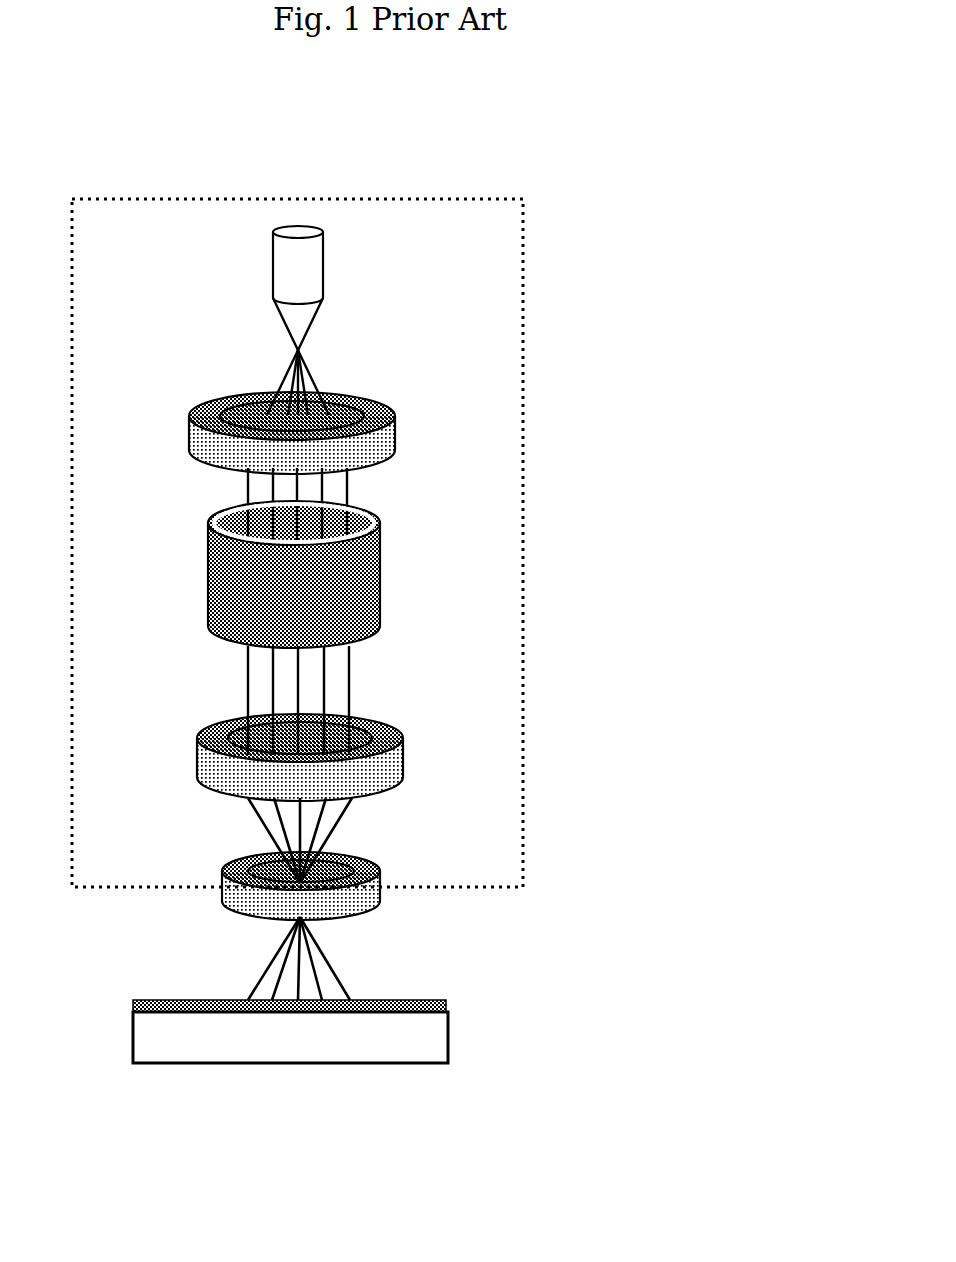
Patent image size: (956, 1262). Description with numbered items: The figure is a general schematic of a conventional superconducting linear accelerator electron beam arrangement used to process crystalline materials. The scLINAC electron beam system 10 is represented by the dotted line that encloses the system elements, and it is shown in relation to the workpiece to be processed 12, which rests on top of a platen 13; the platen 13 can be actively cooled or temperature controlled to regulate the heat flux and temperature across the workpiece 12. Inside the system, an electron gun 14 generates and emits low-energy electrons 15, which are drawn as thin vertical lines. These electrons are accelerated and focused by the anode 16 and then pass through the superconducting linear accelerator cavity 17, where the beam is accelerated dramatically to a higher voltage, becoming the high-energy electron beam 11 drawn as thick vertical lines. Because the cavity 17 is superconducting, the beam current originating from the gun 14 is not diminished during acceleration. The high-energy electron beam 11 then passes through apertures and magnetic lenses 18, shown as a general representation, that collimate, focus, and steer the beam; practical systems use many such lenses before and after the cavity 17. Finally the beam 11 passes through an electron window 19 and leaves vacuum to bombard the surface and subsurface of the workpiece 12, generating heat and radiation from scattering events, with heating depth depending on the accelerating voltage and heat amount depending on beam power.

The scLINAC electron beam system 10 is at (525, 427).
The high-energy electron beam 11 is at (345, 975).
The workpiece 12 is at (448, 1005).
The platen 13 is at (425, 1045).
The electron gun 14 is at (335, 262).
The low-energy electrons 15 is at (315, 367).
The anode 16 is at (396, 411).
The superconducting linear accelerator cavity 17 is at (382, 560).
The magnetic lens 18 is at (403, 725).
The electron window 19 is at (370, 853).